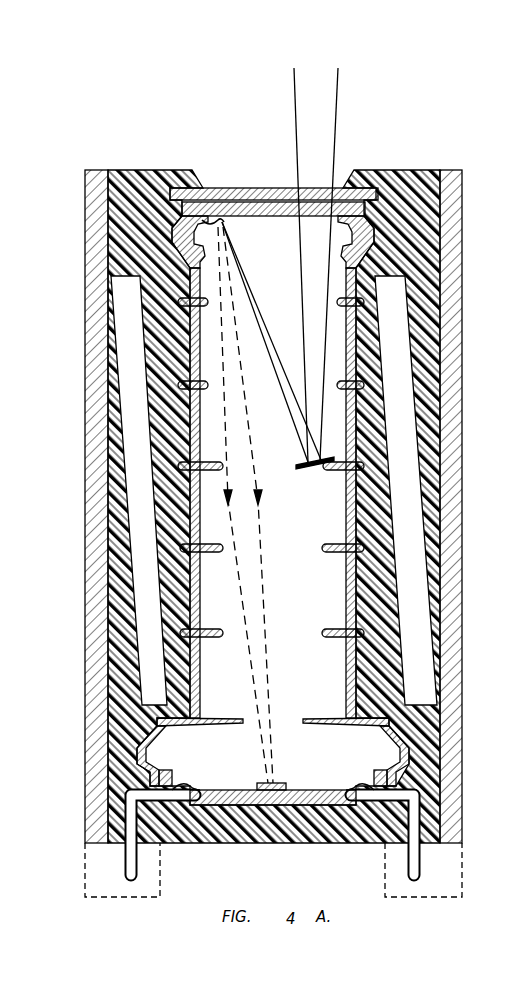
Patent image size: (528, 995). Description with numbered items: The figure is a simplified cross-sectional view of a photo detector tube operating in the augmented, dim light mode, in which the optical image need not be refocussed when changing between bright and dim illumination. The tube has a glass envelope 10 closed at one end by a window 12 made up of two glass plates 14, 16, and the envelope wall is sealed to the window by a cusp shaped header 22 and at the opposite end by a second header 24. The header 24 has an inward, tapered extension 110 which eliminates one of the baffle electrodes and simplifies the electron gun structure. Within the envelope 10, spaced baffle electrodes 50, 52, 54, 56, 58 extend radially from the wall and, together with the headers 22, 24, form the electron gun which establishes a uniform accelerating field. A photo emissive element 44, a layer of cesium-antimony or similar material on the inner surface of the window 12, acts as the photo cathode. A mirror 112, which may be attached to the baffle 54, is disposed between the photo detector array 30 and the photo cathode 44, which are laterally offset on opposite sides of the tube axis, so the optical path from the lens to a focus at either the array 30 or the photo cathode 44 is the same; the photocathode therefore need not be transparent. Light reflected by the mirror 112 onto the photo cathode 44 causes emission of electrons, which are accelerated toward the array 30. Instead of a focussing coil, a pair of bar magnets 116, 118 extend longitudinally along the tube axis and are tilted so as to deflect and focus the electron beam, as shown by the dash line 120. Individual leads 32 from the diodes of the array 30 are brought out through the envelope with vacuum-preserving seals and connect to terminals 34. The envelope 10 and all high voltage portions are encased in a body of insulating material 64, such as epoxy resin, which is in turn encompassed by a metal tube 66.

The envelope 10 is at (347, 673).
The window 12 is at (256, 186).
The glass plate 14 is at (282, 217).
The glass plate 16 is at (228, 190).
The header 22 is at (353, 242).
The header 24 is at (186, 725).
The photo detector array 30 is at (286, 785).
The leads 32 is at (194, 782).
The terminals 34 is at (138, 878).
The photo emissive element 44 is at (224, 224).
The baffle electrode 50 is at (190, 302).
The baffle electrode 52 is at (128, 437).
The baffle electrode 54 is at (192, 468).
The baffle electrode 56 is at (216, 553).
The baffle electrode 58 is at (216, 638).
The body of insulating material 64 is at (408, 178).
The metal tube 66 is at (455, 345).
The tapered extension 110 is at (232, 720).
The mirror 112 is at (317, 468).
The bar magnet 116 is at (127, 393).
The bar magnet 118 is at (422, 652).
The dash line 120 is at (228, 431).